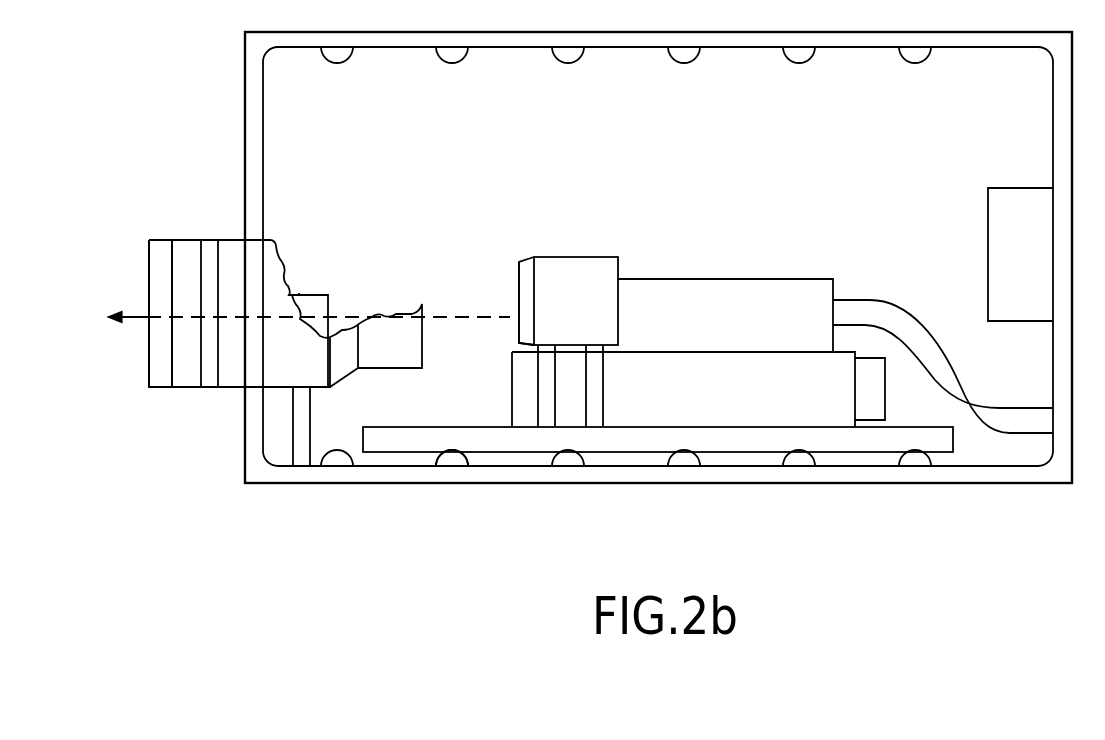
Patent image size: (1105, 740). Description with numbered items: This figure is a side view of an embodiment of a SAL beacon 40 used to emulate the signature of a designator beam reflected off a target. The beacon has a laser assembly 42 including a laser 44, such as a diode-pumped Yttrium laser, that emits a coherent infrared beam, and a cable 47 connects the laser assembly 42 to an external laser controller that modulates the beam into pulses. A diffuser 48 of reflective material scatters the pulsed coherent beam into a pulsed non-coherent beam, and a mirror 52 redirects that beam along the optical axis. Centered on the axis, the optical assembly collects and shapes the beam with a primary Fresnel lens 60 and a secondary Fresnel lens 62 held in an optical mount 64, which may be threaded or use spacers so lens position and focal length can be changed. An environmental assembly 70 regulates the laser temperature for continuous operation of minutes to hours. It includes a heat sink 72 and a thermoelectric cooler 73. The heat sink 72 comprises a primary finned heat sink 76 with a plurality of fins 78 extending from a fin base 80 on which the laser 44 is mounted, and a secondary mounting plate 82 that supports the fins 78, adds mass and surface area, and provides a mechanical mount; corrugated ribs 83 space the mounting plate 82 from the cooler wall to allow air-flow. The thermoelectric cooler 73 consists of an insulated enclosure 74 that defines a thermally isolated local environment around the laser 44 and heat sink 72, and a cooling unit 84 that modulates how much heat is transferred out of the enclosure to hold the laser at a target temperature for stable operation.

The SAL beacon 40 is at (228, 478).
The laser assembly 42 is at (775, 267).
The laser 44 is at (705, 280).
The cable 47 is at (911, 316).
The diffuser 48 is at (318, 290).
The mirror 52 is at (549, 254).
The primary Fresnel lens 60 is at (209, 240).
The secondary Fresnel lens 62 is at (155, 240).
The optical mount 64 is at (229, 390).
The environmental assembly 70 is at (796, 509).
The heat sink 72 is at (484, 410).
The thermoelectric cooler 73 is at (1006, 122).
The insulated enclosure 74 is at (245, 80).
The finned heat sink 76 is at (512, 385).
The fins 78 is at (712, 403).
The fin base 80 is at (512, 344).
The mounting plate 82 is at (386, 427).
The corrugated ribs 83 is at (450, 470).
The cooling unit 84 is at (1002, 188).